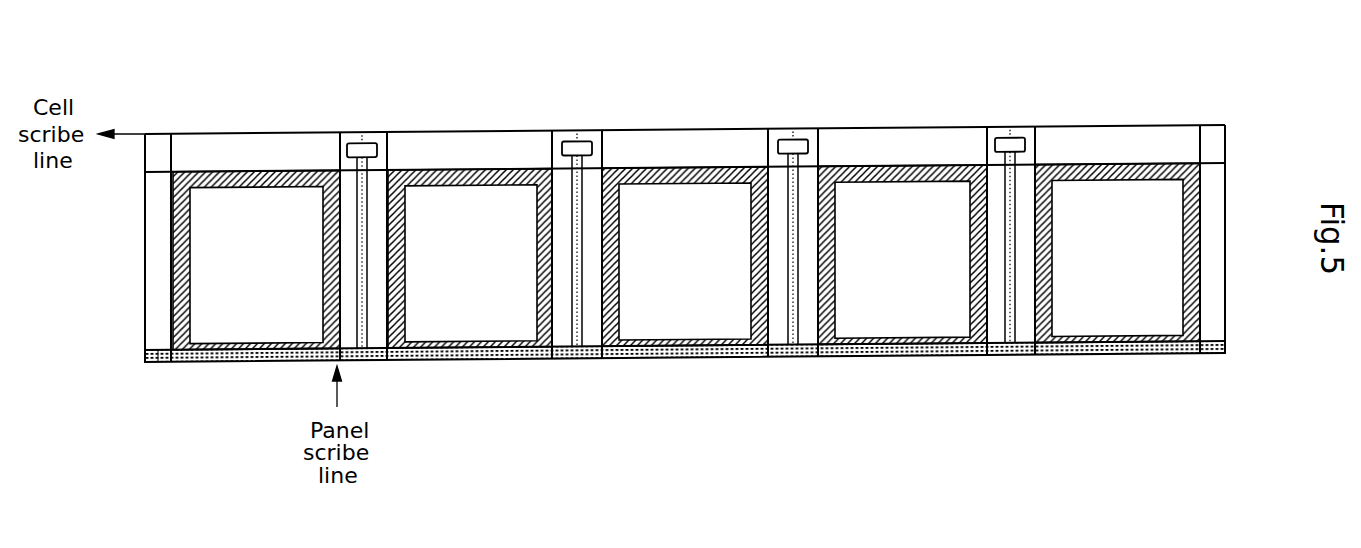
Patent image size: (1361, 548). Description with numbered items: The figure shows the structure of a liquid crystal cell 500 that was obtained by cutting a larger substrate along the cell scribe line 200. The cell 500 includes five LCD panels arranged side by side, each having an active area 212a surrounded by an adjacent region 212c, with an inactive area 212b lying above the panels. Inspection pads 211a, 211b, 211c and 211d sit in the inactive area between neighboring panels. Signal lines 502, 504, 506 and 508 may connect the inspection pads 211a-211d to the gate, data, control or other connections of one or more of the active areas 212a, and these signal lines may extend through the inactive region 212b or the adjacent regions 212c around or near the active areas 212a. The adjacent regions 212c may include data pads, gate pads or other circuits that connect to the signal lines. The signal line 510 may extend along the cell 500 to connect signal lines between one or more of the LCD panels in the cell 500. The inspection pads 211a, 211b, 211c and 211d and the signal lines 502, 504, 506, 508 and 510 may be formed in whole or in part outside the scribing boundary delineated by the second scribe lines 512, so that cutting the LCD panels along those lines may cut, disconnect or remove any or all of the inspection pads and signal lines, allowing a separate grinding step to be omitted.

The cell scribe line 200 is at (1130, 126).
The inspection pad 211a is at (362, 145).
The inspection pad 211b is at (578, 143).
The inspection pad 211c is at (794, 141).
The inspection pad 211d is at (1012, 139).
The active area 212a is at (196, 264).
The inactive area 212b is at (247, 152).
The adjacent region 212c is at (333, 172).
The liquid crystal cell 500 is at (641, 434).
The signal line 502 is at (397, 363).
The signal line 504 is at (580, 362).
The signal line 506 is at (795, 362).
The signal line 508 is at (1010, 362).
The signal line 510 is at (162, 363).
The second scribe line 512 is at (350, 356).